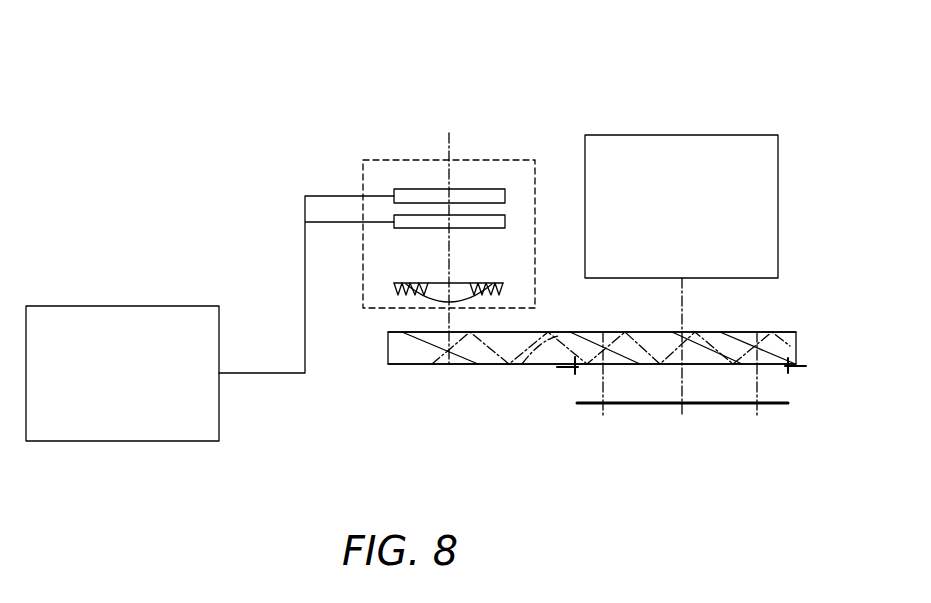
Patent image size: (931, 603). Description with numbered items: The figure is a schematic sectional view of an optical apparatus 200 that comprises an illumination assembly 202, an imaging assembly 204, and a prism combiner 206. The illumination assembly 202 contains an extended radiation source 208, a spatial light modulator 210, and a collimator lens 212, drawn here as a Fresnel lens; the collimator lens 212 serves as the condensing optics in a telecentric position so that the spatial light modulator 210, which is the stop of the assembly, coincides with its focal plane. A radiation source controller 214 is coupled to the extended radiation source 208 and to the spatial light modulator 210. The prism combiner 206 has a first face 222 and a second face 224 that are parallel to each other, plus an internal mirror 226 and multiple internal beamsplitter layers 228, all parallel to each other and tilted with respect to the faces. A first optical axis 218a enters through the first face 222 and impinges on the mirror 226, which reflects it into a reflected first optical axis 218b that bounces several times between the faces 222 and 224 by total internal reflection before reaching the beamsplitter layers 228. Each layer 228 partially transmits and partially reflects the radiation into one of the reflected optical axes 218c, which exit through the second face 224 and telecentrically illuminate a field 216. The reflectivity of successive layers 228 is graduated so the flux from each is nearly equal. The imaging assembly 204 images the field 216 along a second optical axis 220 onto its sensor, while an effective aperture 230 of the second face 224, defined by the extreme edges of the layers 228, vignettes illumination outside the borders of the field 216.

The optical apparatus 200 is at (782, 87).
The illumination assembly 202 is at (387, 158).
The imaging assembly 204 is at (778, 173).
The prism combiner 206 is at (796, 358).
The extended radiation source 208 is at (492, 189).
The spatial light modulator 210 is at (505, 228).
The collimator lens 212 is at (396, 280).
The radiation source controller 214 is at (120, 306).
The field 216 is at (693, 407).
The first optical axis 218a is at (450, 306).
The reflected first optical axis 218b is at (528, 364).
The reflected optical axes 218c is at (680, 392).
The second optical axis 220 is at (683, 307).
The first face 222 is at (777, 332).
The second face 224 is at (478, 364).
The internal mirror 226 is at (453, 364).
The internal beamsplitter layers 228 is at (658, 332).
The effective aperture 230 is at (563, 368).